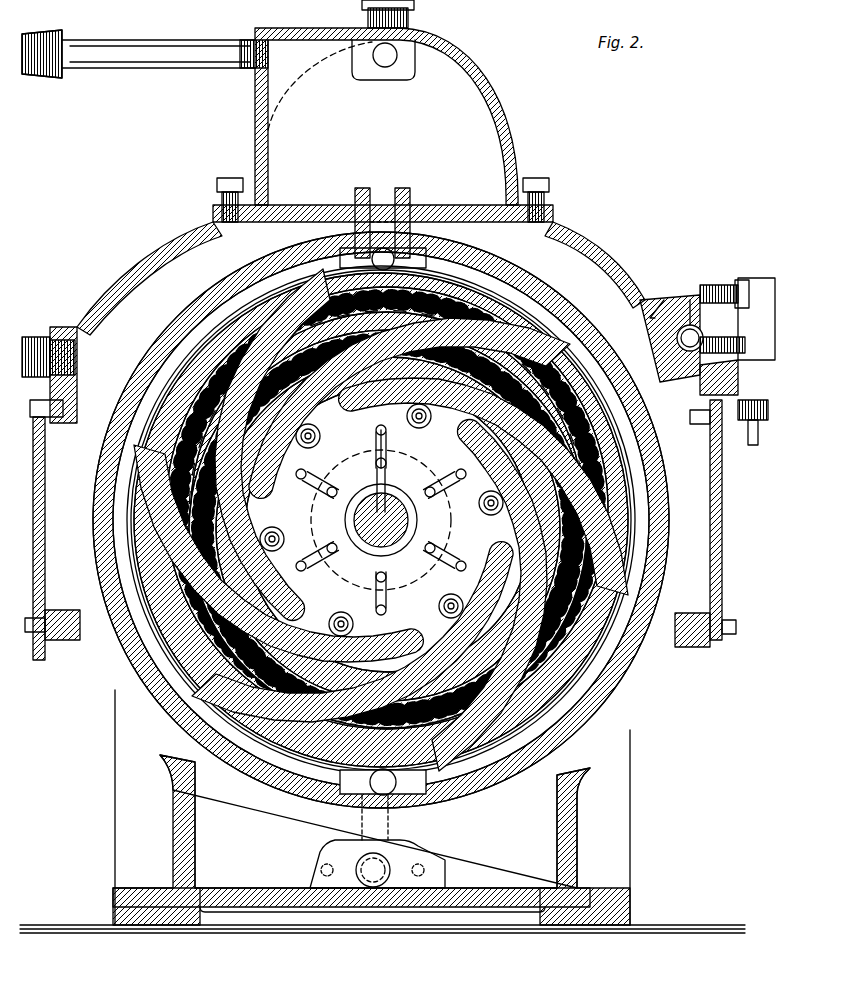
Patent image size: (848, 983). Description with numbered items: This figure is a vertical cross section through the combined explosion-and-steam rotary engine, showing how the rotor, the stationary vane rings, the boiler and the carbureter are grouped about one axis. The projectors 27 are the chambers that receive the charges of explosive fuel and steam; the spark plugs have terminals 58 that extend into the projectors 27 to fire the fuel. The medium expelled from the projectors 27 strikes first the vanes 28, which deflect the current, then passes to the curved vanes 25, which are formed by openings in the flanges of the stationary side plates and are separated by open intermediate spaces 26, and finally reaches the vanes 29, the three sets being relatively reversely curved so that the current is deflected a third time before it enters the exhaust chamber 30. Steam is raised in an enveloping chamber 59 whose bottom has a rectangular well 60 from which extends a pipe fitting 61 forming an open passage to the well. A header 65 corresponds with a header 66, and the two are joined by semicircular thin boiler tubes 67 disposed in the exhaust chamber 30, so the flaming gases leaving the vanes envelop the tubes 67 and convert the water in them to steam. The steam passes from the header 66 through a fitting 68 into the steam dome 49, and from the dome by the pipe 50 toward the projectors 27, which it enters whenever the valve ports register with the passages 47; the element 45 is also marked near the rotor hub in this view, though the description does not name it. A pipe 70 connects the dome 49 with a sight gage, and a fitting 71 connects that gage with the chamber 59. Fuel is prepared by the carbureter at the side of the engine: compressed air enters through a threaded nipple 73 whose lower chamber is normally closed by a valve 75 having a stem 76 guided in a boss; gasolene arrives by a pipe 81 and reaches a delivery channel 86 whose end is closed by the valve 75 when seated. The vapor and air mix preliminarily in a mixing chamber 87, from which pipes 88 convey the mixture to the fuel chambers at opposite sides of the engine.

The curved vanes 25 is at (394, 712).
The open intermediate spaces 26 is at (388, 529).
The projectors 27 is at (381, 520).
The vanes 28 is at (388, 529).
The vanes 29 is at (598, 550).
The exhaust chamber 30 is at (486, 764).
The link pin 45 is at (369, 528).
The passages 47 is at (332, 497).
The steam dome 49 is at (490, 112).
The pipe 50 is at (384, 60).
The terminals 58 is at (310, 430).
The enveloping chamber 59 is at (690, 586).
The rectangular well 60 is at (382, 811).
The pipe fitting 61 is at (356, 868).
The header 65 is at (383, 782).
The header 66 is at (386, 264).
The boiler tubes 67 is at (636, 564).
The fitting 68 is at (387, 197).
The pipe 70 is at (172, 52).
The fitting 71 is at (32, 342).
The threaded nipple 73 is at (722, 290).
The valve 75 is at (681, 338).
The stem 76 is at (738, 336).
The pipe 81 is at (752, 440).
The delivery channel 86 is at (745, 345).
The mixing chamber 87 is at (698, 301).
The pipes 88 is at (664, 298).